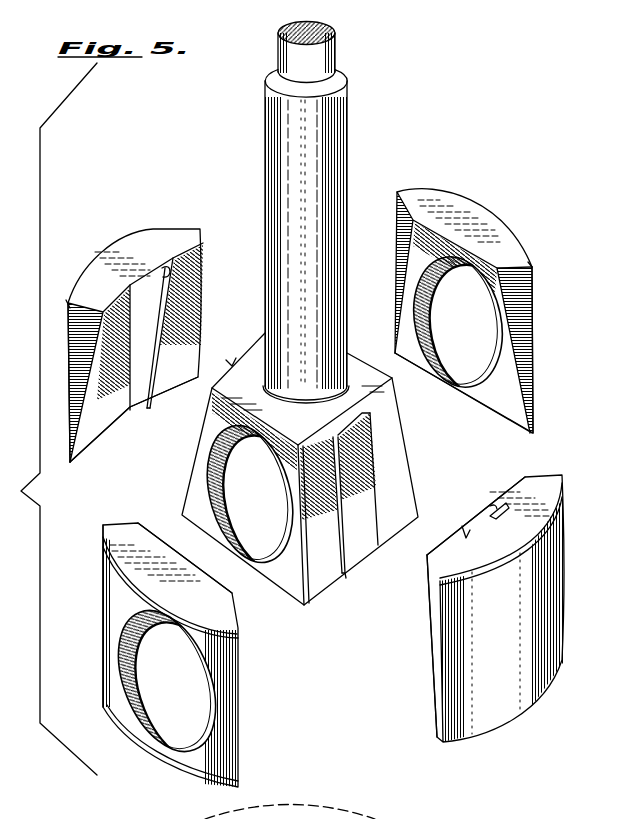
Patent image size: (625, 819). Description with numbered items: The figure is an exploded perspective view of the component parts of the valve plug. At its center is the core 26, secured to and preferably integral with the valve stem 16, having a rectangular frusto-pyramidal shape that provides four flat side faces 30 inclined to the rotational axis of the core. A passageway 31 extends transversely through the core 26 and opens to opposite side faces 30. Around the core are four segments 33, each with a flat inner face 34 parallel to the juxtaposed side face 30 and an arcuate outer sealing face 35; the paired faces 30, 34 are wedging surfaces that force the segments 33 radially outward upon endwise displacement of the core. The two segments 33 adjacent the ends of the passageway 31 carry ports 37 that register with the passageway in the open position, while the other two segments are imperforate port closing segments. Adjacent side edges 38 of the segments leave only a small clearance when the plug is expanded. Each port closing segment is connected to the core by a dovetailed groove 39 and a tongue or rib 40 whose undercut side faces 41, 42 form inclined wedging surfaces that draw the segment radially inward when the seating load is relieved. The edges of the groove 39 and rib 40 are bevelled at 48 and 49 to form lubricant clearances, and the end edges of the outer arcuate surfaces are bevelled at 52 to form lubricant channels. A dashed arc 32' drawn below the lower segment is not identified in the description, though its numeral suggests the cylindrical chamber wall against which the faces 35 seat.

The valve stem 16 is at (345, 153).
The central core 26 is at (306, 479).
The flat side faces 30 is at (378, 367).
The passageway 31 is at (247, 520).
The mounting ring 32' is at (295, 806).
The segment 33 is at (103, 523).
The flat inner face 34 is at (110, 423).
The arcuate outer sealing face 35 is at (315, 485).
The ports 37 is at (448, 347).
The side edges 38 is at (202, 277).
The dovetailed groove 39 is at (152, 338).
The tongue or rib 40 is at (252, 340).
The undercut side face of groove 41 is at (165, 272).
The undercut side face of rib 42 is at (232, 363).
The bevelled edge of groove 48 is at (152, 388).
The bevelled edge of rib 49 is at (343, 577).
The bevelled end edges of outer arcuate surfaces 52 is at (72, 302).